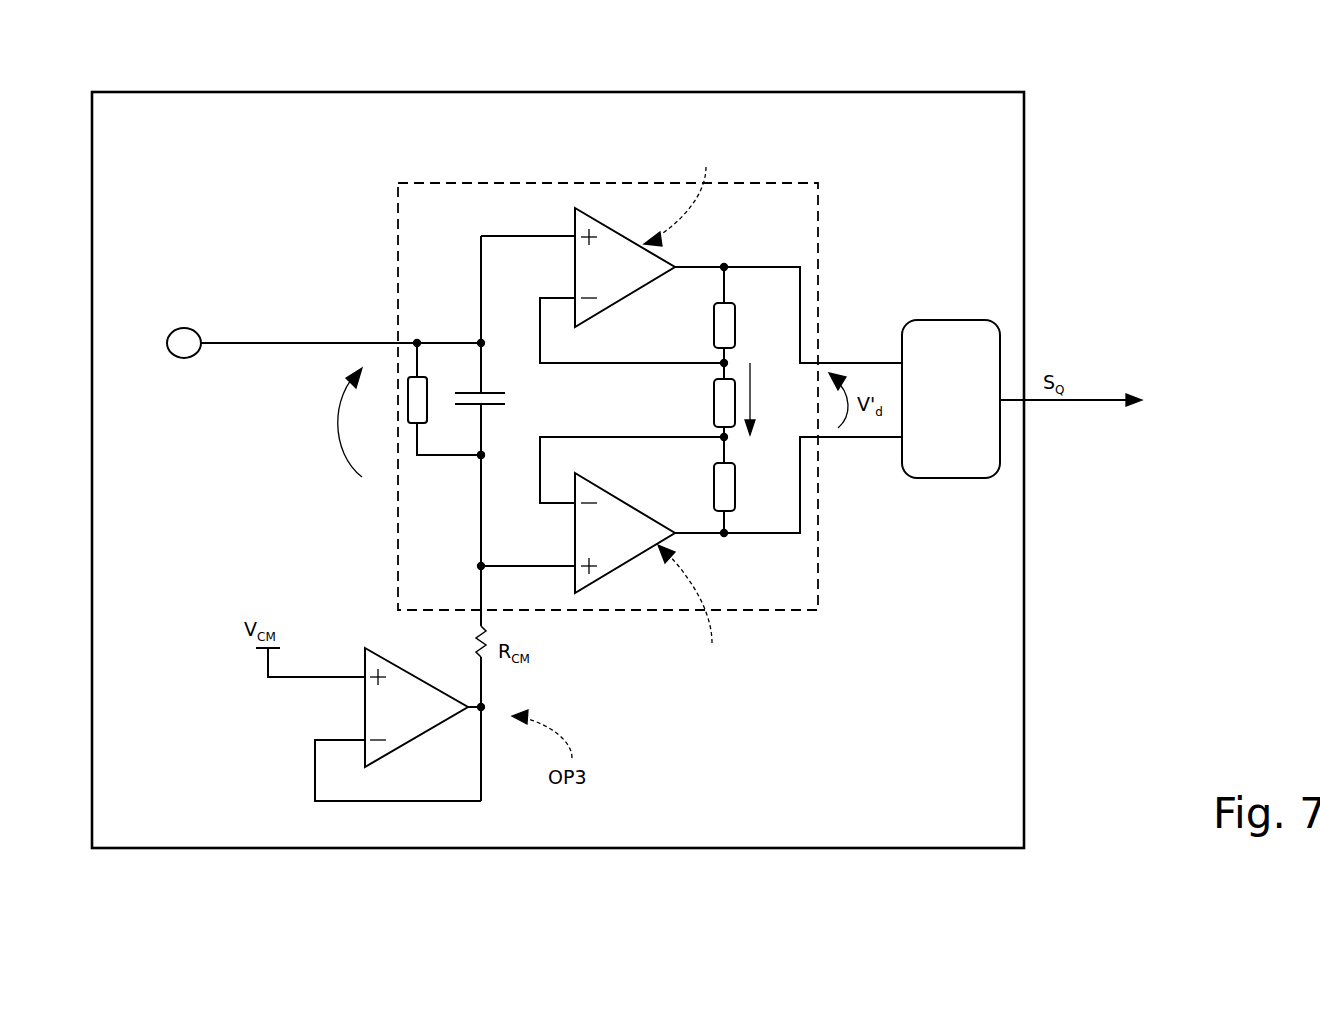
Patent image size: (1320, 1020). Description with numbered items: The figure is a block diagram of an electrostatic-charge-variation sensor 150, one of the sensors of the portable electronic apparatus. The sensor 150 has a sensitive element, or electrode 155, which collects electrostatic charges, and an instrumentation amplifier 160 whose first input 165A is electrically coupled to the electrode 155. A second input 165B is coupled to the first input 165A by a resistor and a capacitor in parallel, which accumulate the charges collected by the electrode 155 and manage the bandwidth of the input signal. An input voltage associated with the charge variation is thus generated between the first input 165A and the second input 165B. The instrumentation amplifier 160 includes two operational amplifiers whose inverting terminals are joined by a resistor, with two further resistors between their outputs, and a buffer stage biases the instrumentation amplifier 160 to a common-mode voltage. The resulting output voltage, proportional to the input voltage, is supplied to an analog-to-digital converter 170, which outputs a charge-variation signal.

The electrostatic-charge-variation sensor 150 is at (216, 101).
The electrode 155 is at (178, 335).
The instrumentation amplifier 160 is at (446, 196).
The first input 165A is at (480, 341).
The second input 165B is at (480, 457).
The analog-to-digital converter 170 is at (975, 330).